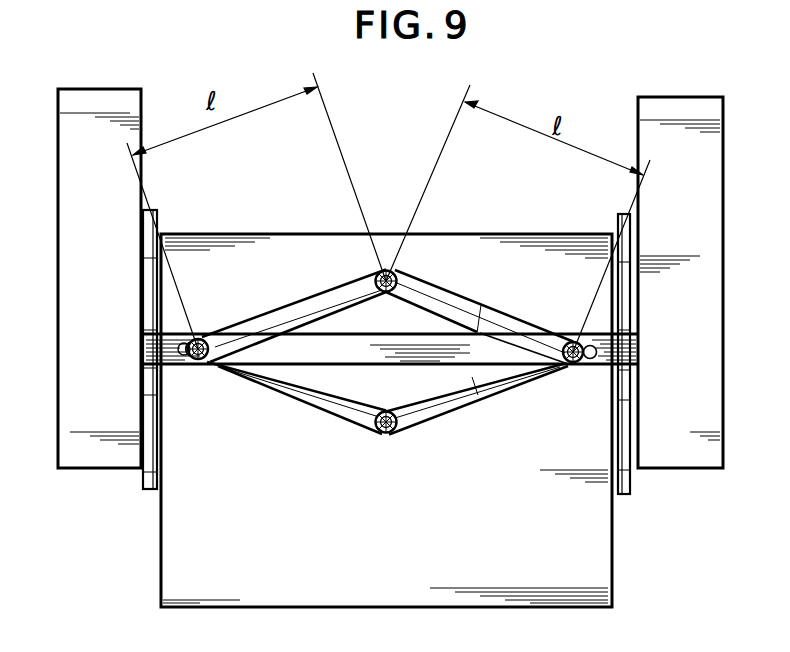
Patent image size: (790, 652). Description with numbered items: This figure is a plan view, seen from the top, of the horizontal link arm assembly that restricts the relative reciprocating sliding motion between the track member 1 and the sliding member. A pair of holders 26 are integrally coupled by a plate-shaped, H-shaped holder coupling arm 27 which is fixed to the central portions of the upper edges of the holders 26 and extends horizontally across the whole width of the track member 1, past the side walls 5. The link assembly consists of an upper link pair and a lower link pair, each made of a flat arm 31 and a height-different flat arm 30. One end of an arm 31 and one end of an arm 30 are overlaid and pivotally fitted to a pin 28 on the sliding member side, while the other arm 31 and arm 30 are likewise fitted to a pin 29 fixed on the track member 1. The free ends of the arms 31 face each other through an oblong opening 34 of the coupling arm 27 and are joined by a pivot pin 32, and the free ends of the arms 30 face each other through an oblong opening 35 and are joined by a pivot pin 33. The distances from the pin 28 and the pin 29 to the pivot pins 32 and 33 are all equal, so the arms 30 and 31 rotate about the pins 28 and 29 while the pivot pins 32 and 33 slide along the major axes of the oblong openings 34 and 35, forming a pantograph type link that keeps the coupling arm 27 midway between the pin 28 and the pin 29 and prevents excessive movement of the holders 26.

The track member 1 is at (479, 607).
The side wall 5 is at (90, 453).
The holders 26 is at (147, 482).
The holder coupling arm 27 is at (380, 348).
The pin on the sliding member side 28 is at (396, 273).
The pin on the track member side 29 is at (388, 434).
The arm member 30 is at (524, 323).
The flat arm 31 is at (302, 300).
The pivot pin 32 is at (206, 340).
The pivot pin 33 is at (574, 365).
The oblong opening 34 is at (182, 358).
The oblong opening 35 is at (595, 362).